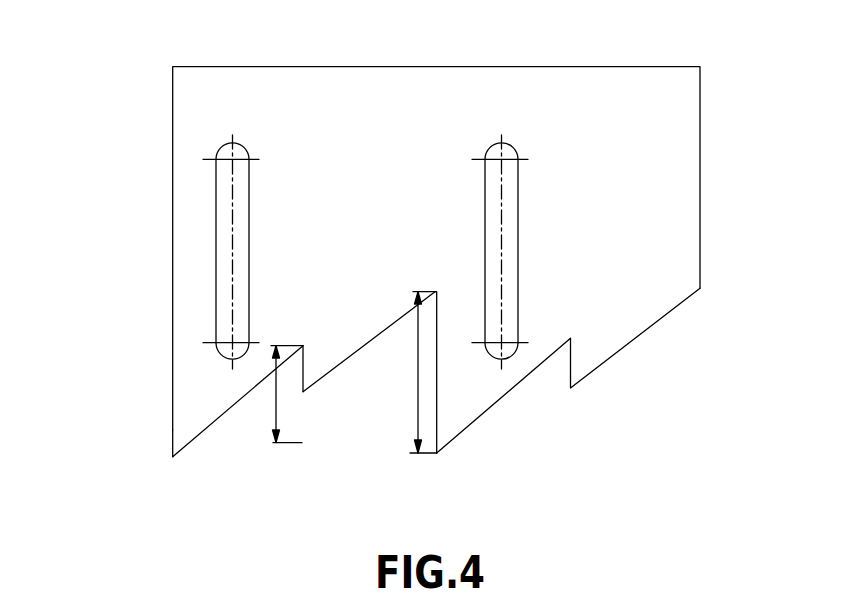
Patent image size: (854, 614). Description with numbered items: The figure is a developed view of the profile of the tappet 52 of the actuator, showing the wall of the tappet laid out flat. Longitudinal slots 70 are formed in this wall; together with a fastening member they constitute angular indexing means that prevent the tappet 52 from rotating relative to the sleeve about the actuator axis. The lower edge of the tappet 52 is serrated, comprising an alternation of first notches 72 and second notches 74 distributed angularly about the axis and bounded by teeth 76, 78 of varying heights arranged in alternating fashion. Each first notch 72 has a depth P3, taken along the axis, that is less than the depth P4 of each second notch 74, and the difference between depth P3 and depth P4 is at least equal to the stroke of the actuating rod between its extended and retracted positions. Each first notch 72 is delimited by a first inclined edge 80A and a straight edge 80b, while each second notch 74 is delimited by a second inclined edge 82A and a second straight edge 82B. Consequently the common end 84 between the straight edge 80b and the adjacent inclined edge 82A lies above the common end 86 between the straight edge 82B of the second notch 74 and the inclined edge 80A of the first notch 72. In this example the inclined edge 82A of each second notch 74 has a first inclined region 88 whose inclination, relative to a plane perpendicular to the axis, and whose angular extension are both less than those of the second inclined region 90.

The tappet 52 is at (145, 127).
The longitudinal slots 70 is at (215, 230).
The first notches 72 is at (281, 346).
The second notches 74 is at (435, 290).
The tooth 76 is at (173, 430).
The tooth 78 is at (373, 350).
The first inclined edge 80A is at (233, 403).
The second straight edge 80b is at (318, 383).
The second inclined edge 82A is at (393, 306).
The second straight edge 82B is at (437, 380).
The common end 84 is at (303, 392).
The common end 86 is at (437, 455).
The first inclined region 88 is at (330, 373).
The second inclined region 90 is at (413, 291).
The depth of the first notches P3 is at (274, 394).
The depth of the second notches P4 is at (414, 372).